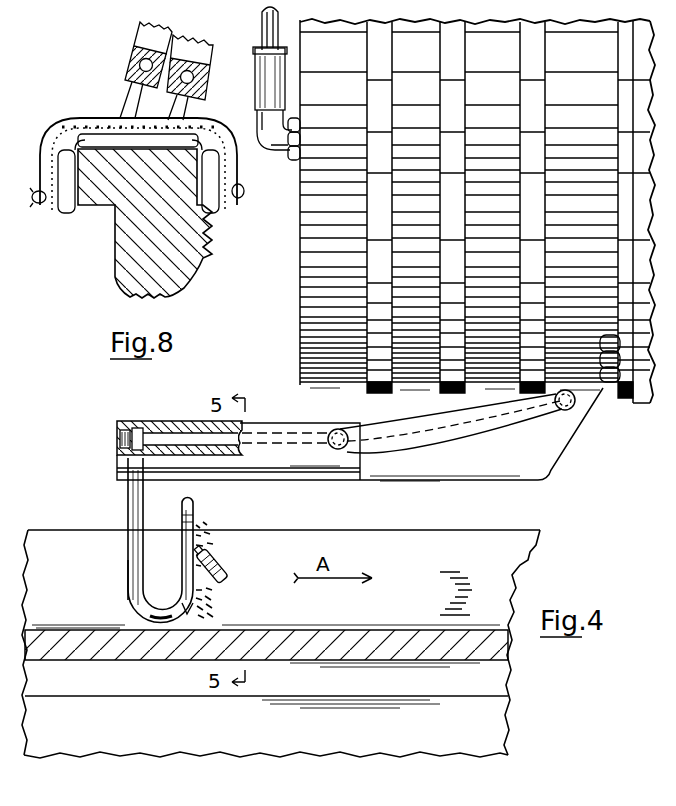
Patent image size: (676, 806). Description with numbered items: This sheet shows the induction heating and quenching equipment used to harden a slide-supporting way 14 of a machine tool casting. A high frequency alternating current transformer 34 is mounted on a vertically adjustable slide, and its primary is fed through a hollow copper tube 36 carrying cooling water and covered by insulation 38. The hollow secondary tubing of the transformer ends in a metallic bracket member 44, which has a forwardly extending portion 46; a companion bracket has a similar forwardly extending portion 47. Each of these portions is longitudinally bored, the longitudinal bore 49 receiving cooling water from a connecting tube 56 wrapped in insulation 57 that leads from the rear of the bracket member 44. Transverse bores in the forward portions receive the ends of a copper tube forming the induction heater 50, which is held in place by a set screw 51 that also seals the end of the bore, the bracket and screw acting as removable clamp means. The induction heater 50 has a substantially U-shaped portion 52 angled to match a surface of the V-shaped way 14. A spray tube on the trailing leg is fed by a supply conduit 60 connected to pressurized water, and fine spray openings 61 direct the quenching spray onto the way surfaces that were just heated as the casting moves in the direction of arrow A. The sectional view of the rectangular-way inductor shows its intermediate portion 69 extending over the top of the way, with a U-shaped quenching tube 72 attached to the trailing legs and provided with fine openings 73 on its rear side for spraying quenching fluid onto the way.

In FIG. 4, the way 14 is at (536, 562).
In FIG. 4, the high frequency alternating current transformer 34 is at (290, 245).
In FIG. 4, the hollow copper tube 36 is at (264, 30).
In FIG. 4, the insulation 38 is at (256, 72).
In FIG. 4, the bracket member 44 is at (596, 445).
In FIG. 8, the forwardly extending portion 46 is at (128, 64).
In FIG. 4, the forwardly extending portion 46 is at (276, 430).
In FIG. 8, the forwardly extending portion 47 is at (202, 72).
In FIG. 4, the longitudinal bore 49 is at (190, 440).
In FIG. 4, the induction heater 50 is at (129, 505).
In FIG. 4, the set screw 51 is at (118, 438).
In FIG. 4, the U-shaped portion 52 is at (128, 581).
In FIG. 4, the connecting tube 56 is at (428, 446).
In FIG. 4, the insulation 57 is at (470, 433).
In FIG. 4, the supply conduit 60 is at (219, 571).
In FIG. 4, the spray openings 61 is at (183, 560).
In FIG. 8, the intermediate portion 69 is at (148, 143).
In FIG. 8, the U-shaped quenching tube 72 is at (106, 119).
In FIG. 8, the fine openings 73 is at (53, 208).